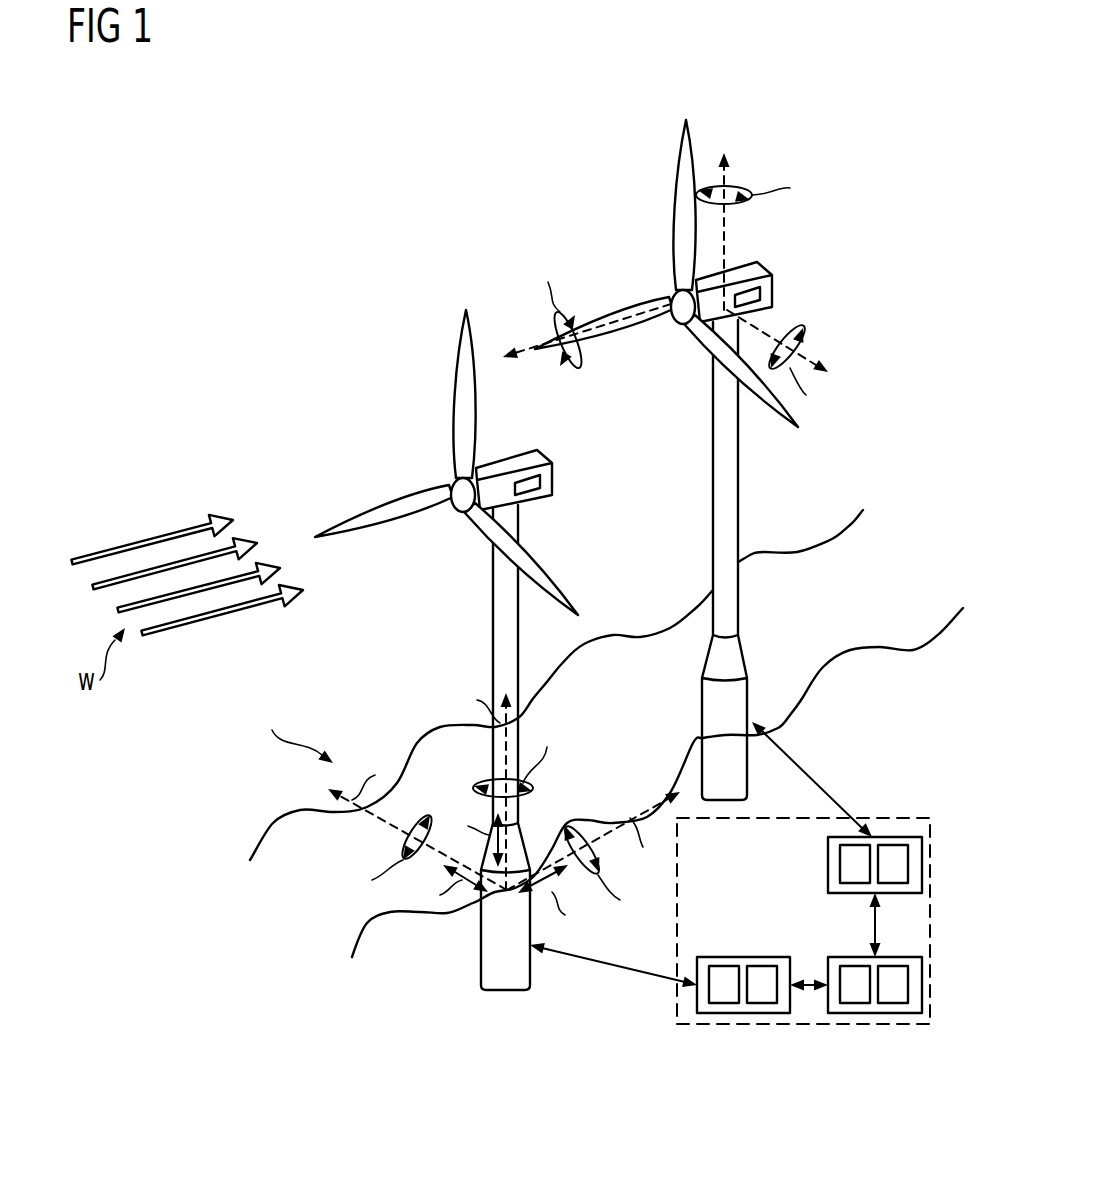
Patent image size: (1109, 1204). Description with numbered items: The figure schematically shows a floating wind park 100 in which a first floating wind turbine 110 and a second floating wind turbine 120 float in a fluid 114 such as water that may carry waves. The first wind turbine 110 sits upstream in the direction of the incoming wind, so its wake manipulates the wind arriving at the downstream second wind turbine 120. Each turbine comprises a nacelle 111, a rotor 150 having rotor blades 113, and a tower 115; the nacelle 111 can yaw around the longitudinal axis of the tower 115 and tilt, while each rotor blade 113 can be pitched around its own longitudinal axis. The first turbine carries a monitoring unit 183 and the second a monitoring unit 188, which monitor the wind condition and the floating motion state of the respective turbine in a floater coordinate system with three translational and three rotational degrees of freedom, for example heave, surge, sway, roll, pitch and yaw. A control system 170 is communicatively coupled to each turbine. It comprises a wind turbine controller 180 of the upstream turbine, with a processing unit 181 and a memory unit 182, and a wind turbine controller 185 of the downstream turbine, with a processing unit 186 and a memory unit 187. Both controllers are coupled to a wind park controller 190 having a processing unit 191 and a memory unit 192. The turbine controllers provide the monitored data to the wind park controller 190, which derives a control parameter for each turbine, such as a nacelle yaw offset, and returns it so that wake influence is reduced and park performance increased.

The floating wind park 100 is at (166, 148).
The first floating wind turbine 110 is at (365, 370).
The nacelle 111 is at (536, 465).
The rotor blades 113 is at (372, 510).
The fluid 114 is at (935, 640).
The tower 115 is at (493, 615).
The second floating wind turbine 120 is at (590, 205).
The rotor 150 is at (446, 421).
The control system 170 is at (897, 802).
The wind turbine controller 180 is at (743, 980).
The processing unit 181 is at (724, 1003).
The memory unit 182 is at (762, 1003).
The monitoring unit 183 is at (538, 488).
The wind turbine controller 185 is at (874, 895).
The processing unit 186 is at (830, 865).
The memory unit 187 is at (918, 865).
The monitoring unit 188 is at (772, 275).
The wind park controller 190 is at (871, 980).
The processing unit 191 is at (855, 1003).
The memory unit 192 is at (893, 1003).